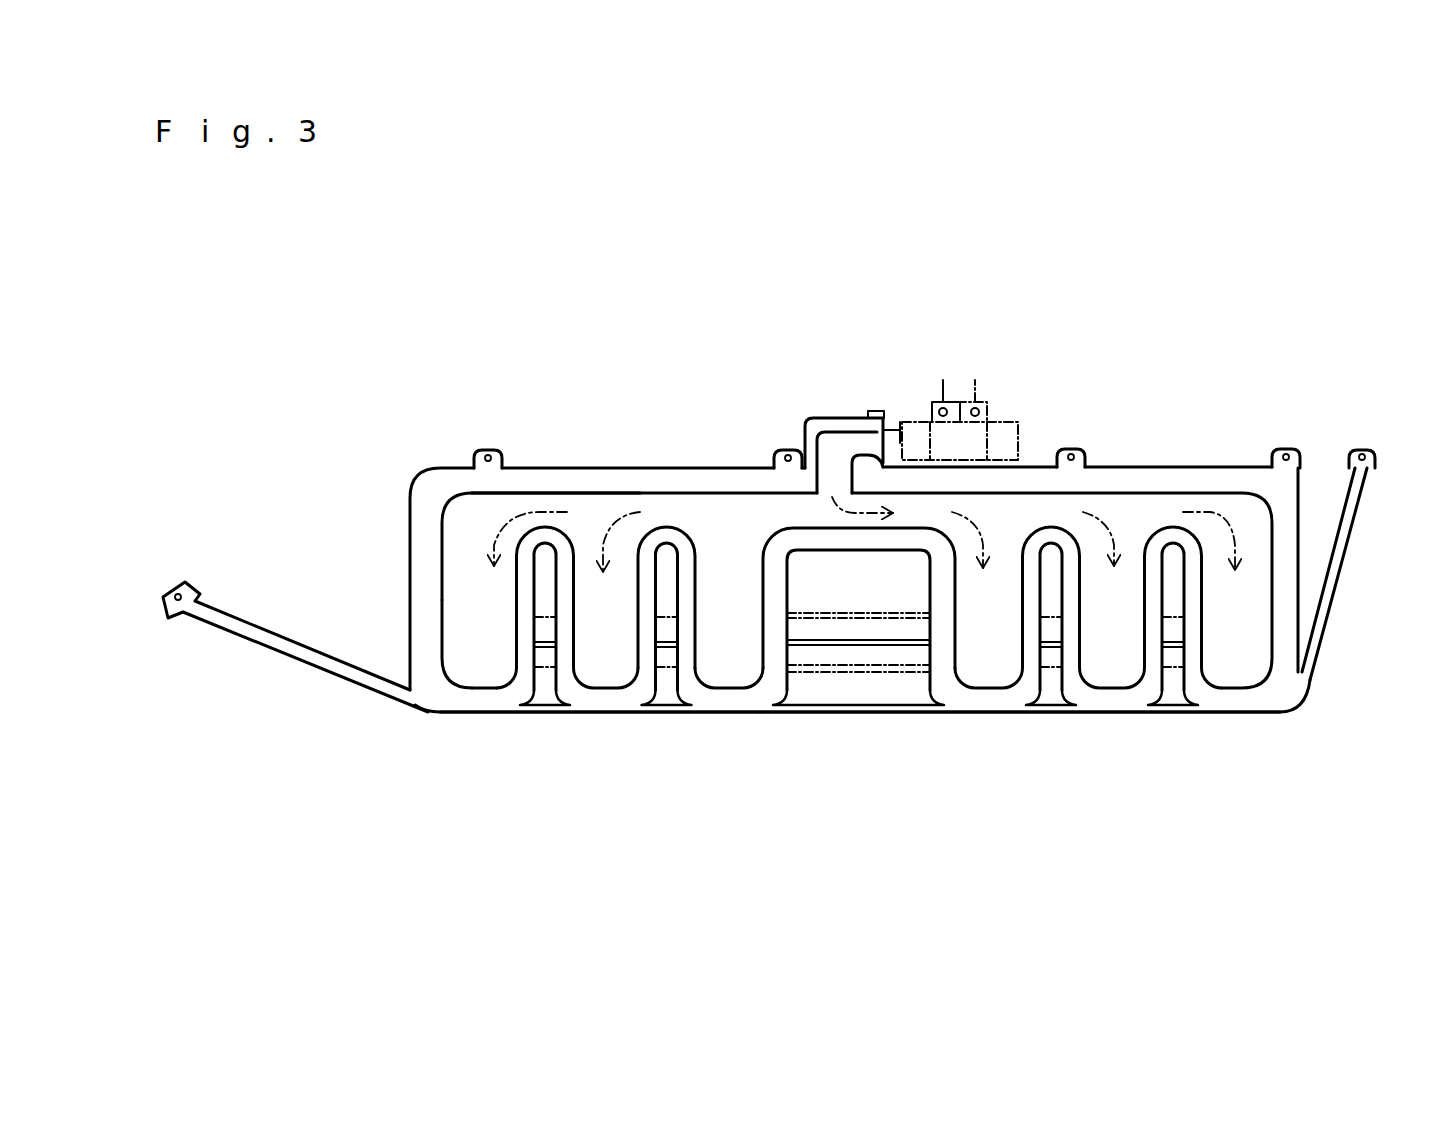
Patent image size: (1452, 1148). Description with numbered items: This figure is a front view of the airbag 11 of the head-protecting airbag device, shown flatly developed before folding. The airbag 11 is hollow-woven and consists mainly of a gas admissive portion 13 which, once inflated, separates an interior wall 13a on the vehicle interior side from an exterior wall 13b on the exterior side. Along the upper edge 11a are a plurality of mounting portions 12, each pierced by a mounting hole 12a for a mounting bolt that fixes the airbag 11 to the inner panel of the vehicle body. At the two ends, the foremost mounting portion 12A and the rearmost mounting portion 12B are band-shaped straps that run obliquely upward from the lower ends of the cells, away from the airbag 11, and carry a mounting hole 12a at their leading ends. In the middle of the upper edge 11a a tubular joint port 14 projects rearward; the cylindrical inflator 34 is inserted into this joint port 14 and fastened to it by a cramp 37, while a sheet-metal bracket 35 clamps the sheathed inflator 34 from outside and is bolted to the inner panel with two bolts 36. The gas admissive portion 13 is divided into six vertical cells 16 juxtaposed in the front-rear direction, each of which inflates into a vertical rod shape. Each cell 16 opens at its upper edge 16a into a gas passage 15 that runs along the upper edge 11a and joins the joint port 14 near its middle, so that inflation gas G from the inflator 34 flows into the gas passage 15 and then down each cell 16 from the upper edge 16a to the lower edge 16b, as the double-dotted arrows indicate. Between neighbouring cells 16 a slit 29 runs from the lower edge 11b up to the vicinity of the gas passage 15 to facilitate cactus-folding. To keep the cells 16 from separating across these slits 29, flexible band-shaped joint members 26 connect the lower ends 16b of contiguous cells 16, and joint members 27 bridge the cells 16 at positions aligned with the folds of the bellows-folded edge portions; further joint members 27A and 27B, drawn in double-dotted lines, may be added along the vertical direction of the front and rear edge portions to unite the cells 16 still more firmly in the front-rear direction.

The airbag 11 is at (345, 335).
The upper edge 11a is at (613, 480).
The lower edge 11b is at (600, 707).
The mounting portion 12 is at (492, 460).
The mounting hole 12a is at (480, 455).
The foremost mounting portion 12A is at (270, 642).
The rearmost mounting portion 12B is at (1349, 522).
The gas admissive portion 13 is at (460, 555).
The interior wall 13a is at (491, 660).
The exterior wall 13b is at (453, 663).
The joint port 14 is at (846, 440).
The gas passage 15 is at (795, 512).
The vertical cell 16 is at (475, 628).
The upper edge of cell 16a is at (588, 540).
The lower edge of cell 16b is at (473, 680).
The joint member 26 is at (542, 708).
The joint member 27 is at (840, 645).
The joint member 27A is at (668, 668).
The joint member 27B is at (545, 612).
The slit 29 is at (668, 548).
The inflator 34 is at (1010, 428).
The bracket 35 is at (977, 400).
The bolt 36 is at (943, 400).
The cramp 37 is at (874, 412).
The inflation gas G is at (873, 548).